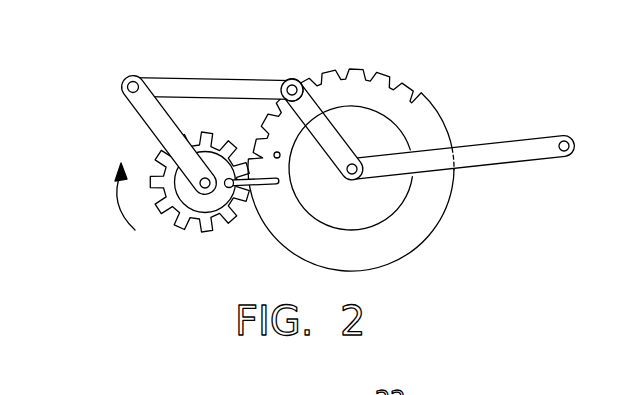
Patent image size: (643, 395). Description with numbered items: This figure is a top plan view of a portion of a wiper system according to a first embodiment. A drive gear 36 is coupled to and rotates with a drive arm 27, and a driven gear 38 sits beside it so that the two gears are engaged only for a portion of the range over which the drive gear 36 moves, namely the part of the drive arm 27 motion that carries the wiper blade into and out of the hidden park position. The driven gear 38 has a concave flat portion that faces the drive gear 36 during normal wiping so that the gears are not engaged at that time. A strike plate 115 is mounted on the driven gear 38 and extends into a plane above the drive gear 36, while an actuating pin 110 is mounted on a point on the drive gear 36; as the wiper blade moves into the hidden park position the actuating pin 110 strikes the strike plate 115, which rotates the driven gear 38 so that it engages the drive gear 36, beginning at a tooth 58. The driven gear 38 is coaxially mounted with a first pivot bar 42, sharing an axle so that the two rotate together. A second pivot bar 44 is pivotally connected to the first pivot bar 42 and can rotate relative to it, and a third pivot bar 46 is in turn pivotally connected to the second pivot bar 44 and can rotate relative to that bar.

The drive arm 27 is at (495, 152).
The drive gear 36 is at (395, 112).
The driven gear 38 is at (194, 198).
The first pivot bar 42 is at (152, 112).
The second pivot bar 44 is at (225, 90).
The third pivot bar 46 is at (302, 103).
The tooth 58 is at (226, 137).
The actuating pin 110 is at (279, 152).
The strike plate 115 is at (248, 184).